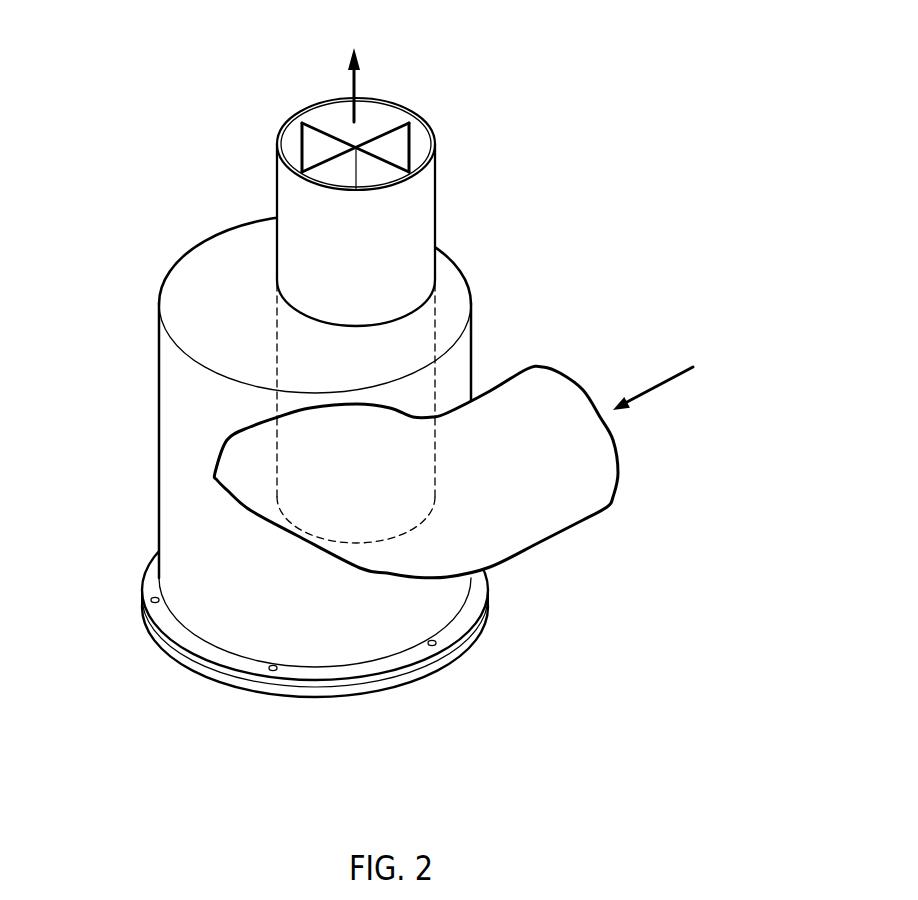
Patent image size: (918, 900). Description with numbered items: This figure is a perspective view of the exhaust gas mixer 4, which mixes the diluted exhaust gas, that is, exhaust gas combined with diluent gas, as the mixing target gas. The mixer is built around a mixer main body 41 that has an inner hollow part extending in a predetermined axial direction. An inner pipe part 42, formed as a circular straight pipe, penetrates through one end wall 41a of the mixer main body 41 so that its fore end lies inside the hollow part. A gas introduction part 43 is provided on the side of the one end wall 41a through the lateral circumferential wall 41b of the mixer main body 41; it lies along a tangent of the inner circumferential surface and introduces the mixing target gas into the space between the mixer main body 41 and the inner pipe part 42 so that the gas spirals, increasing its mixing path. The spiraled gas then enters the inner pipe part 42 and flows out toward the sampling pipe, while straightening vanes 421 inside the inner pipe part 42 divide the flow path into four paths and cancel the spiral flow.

The exhaust gas mixer 4 is at (431, 359).
The mixer main body 41 is at (267, 437).
The one end wall 41a is at (227, 267).
The lateral circumferential wall 41b is at (233, 512).
The inner pipe part 42 is at (265, 282).
The straightening vanes 421 is at (322, 130).
The gas introduction part 43 is at (543, 545).